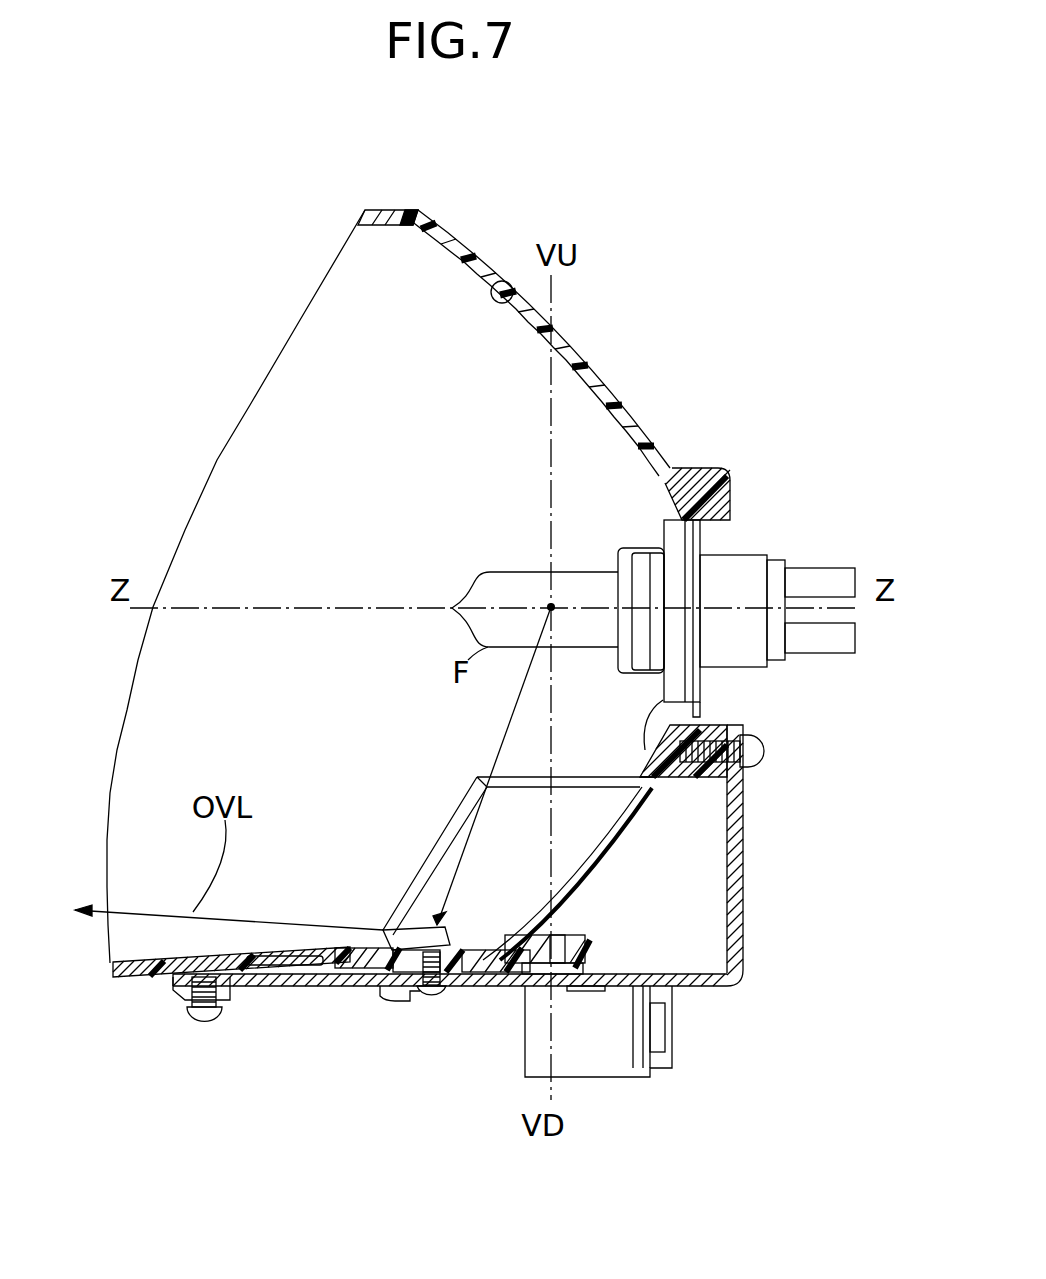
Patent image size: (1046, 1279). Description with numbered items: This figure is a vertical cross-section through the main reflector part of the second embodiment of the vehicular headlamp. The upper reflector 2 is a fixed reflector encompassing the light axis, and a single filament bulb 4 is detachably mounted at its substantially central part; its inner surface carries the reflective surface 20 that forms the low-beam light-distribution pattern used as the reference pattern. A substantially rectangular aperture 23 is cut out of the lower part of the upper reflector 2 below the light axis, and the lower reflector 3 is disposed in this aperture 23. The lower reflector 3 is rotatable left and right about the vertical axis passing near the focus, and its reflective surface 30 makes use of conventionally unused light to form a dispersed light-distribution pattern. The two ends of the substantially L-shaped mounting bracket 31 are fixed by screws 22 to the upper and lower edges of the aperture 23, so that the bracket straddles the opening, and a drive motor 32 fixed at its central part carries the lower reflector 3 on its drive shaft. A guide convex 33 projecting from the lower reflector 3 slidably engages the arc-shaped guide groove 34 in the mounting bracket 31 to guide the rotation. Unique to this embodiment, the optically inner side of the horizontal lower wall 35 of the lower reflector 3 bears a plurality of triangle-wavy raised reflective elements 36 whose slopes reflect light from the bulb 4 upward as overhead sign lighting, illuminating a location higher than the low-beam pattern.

The upper reflector 2 is at (468, 233).
The reflective surface 20 is at (502, 281).
The single filament bulb 4 is at (492, 571).
The screws 22 is at (757, 752).
The lower reflector 3 is at (549, 868).
The reflective surface 30 is at (600, 838).
The mounting bracket 31 is at (745, 900).
The drive motor 32 is at (618, 1030).
The guide convex 33 is at (430, 995).
The guide groove 34 is at (497, 988).
The horizontal lower wall 35 is at (343, 962).
The reflective elements 36 is at (372, 935).
The aperture 23 is at (417, 870).